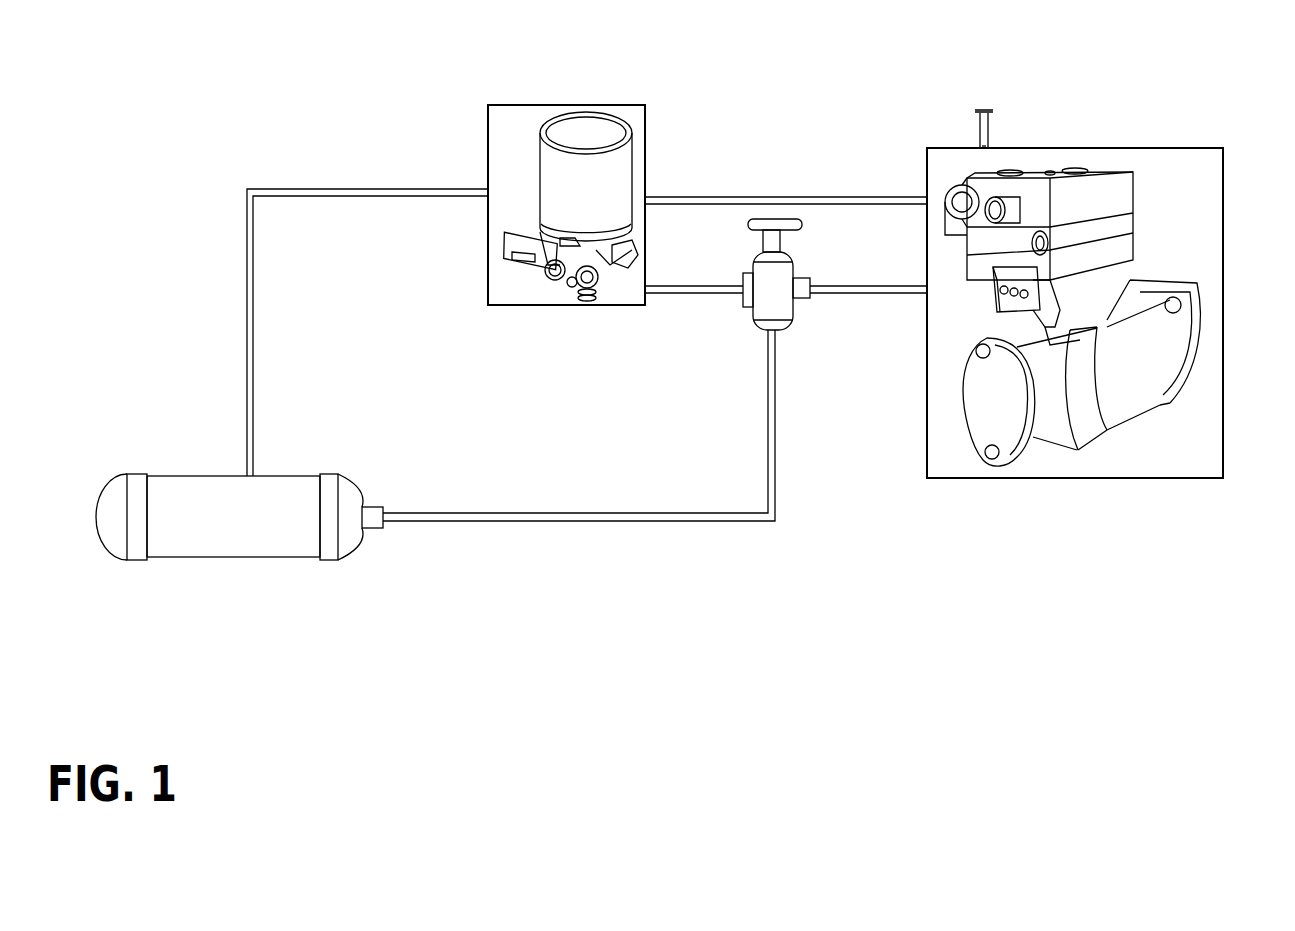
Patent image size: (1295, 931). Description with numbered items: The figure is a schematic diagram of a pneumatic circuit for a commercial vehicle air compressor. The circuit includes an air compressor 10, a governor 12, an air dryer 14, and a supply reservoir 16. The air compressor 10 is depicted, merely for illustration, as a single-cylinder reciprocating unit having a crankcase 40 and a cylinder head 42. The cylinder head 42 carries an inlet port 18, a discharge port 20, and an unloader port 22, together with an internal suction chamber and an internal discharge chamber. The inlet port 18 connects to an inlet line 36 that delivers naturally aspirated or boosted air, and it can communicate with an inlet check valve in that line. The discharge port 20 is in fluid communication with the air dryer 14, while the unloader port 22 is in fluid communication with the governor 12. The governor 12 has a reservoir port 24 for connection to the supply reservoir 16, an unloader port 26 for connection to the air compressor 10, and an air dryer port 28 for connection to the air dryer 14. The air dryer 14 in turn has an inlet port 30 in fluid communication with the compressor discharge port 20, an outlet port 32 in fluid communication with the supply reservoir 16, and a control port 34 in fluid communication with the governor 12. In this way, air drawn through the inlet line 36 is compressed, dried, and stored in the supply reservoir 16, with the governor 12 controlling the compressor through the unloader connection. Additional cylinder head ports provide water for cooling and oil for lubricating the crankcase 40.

The air compressor 10 is at (1108, 264).
The governor 12 is at (753, 322).
The air dryer 14 is at (530, 104).
The supply reservoir 16 is at (233, 558).
The inlet port 18 is at (990, 148).
The discharge port 20 is at (926, 197).
The unloader port 22 is at (927, 293).
The reservoir port 24 is at (778, 332).
The unloader port 26 is at (810, 287).
The air dryer port 28 is at (743, 287).
The inlet port 30 is at (646, 197).
The outlet port 32 is at (488, 189).
The control port 34 is at (647, 293).
The inlet line 36 is at (978, 122).
The crankcase 40 is at (1244, 283).
The cylinder head 42 is at (1244, 155).